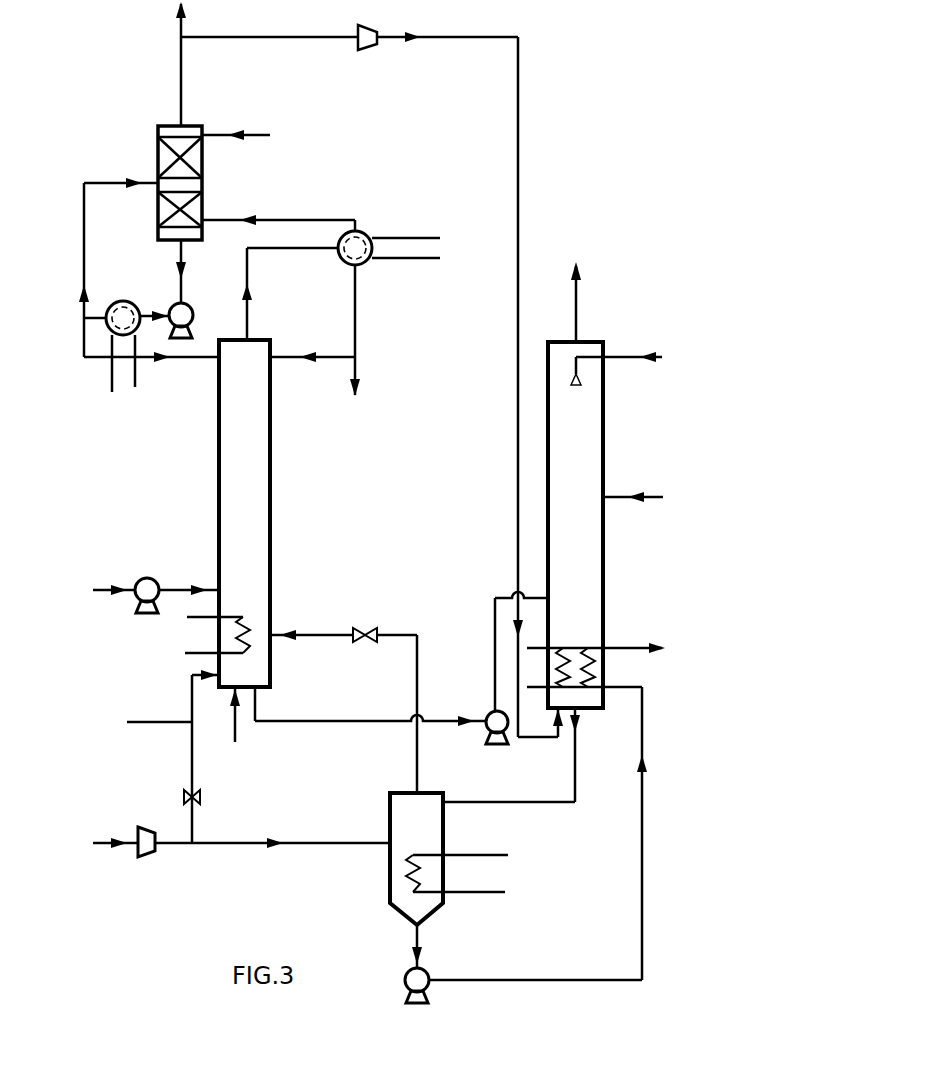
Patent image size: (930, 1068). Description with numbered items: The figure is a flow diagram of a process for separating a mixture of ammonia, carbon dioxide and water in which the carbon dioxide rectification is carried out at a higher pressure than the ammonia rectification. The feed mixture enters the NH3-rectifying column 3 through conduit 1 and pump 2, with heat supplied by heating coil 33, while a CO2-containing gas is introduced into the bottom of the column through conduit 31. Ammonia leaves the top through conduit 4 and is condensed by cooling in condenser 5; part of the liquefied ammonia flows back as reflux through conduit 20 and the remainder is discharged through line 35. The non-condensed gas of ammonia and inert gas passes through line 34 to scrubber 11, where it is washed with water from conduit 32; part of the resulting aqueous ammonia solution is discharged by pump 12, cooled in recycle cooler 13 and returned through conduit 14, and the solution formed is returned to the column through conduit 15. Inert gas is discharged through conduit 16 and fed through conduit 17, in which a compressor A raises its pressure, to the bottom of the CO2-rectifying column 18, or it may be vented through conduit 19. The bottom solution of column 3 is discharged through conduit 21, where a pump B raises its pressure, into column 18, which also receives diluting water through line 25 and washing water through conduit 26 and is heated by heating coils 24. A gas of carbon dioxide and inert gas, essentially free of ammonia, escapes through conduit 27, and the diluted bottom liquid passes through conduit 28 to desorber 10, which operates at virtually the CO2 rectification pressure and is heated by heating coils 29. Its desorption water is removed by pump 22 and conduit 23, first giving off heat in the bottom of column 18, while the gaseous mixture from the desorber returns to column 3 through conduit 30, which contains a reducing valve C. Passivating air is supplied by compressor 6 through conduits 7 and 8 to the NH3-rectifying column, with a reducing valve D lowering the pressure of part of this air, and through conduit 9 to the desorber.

The conduit 1 is at (126, 587).
The pump 2 is at (139, 610).
The NH3-rectifying column 3 is at (219, 483).
The conduit 4 is at (313, 250).
The condenser 5 is at (366, 234).
The compressor 6 is at (147, 826).
The conduit 7 is at (182, 844).
The conduit 8 is at (163, 756).
The conduit 9 is at (226, 844).
The desorber 10 is at (443, 828).
The scrubber 11 is at (158, 203).
The pump 12 is at (173, 306).
The recycle cooler 13 is at (121, 301).
The conduit 14 is at (84, 233).
The conduit 15 is at (123, 385).
The conduit 16 is at (181, 71).
The conduit 17 is at (293, 37).
The CO2-rectifying column 18 is at (603, 405).
The conduit 19 is at (181, 17).
The conduit 20 is at (286, 357).
The conduit 21 is at (287, 719).
The pump 22 is at (426, 972).
The conduit 23 is at (642, 713).
The heating coils 24 is at (530, 648).
The line 25 is at (660, 496).
The conduit 26 is at (615, 360).
The conduit 27 is at (576, 305).
The conduit 28 is at (482, 800).
The heating coils 29 is at (457, 873).
The conduit 30 is at (298, 633).
The conduit 31 is at (238, 730).
The conduit 32 is at (269, 135).
The heating coil 33 is at (190, 617).
The line 34 is at (275, 215).
The line 35 is at (359, 368).